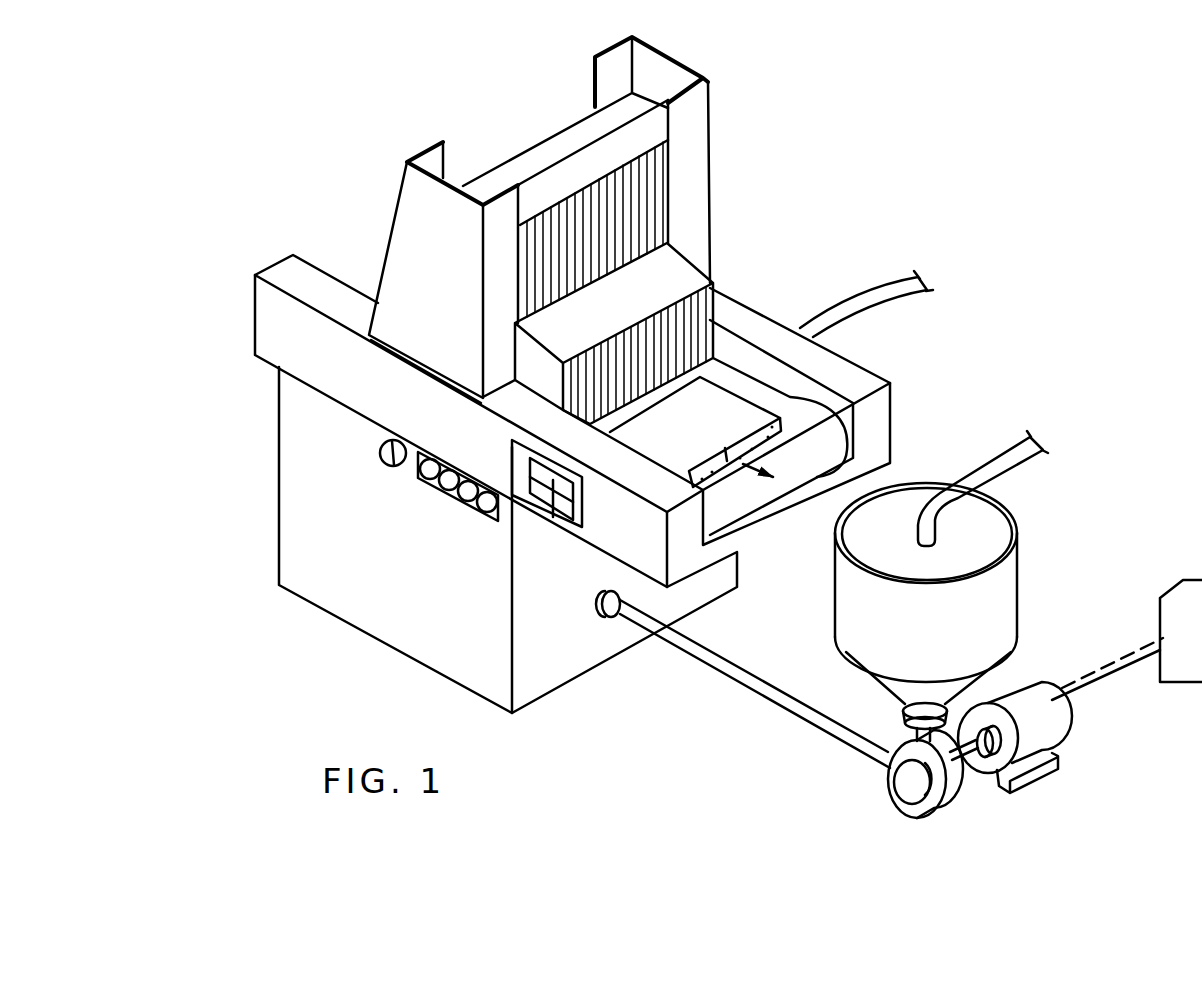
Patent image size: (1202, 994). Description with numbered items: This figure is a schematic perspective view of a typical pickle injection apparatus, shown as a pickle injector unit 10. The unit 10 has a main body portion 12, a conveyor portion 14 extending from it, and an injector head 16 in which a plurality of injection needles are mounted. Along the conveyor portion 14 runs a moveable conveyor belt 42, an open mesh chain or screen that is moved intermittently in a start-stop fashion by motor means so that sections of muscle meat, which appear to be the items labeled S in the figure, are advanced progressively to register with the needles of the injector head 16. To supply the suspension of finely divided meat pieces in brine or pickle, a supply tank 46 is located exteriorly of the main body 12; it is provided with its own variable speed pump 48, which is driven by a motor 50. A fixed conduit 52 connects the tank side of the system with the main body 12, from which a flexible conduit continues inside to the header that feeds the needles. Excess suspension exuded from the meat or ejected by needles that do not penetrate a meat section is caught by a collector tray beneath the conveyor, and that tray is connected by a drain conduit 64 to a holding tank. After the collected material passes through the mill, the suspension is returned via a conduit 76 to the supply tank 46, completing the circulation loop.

The pickle injector unit 10 is at (258, 466).
The main body portion 12 is at (407, 562).
The conveyor portion 14 is at (345, 241).
The injector head 16 is at (724, 135).
The dough sheet S is at (350, 285).
The moveable conveyor belt 42 is at (997, 582).
The supply tank 46 is at (802, 425).
The variable speed pump 48 is at (890, 784).
The motor 50 is at (1037, 700).
The fixed conduit 52 is at (745, 688).
The drain conduit 64 is at (880, 292).
The conduit 76 is at (1020, 447).